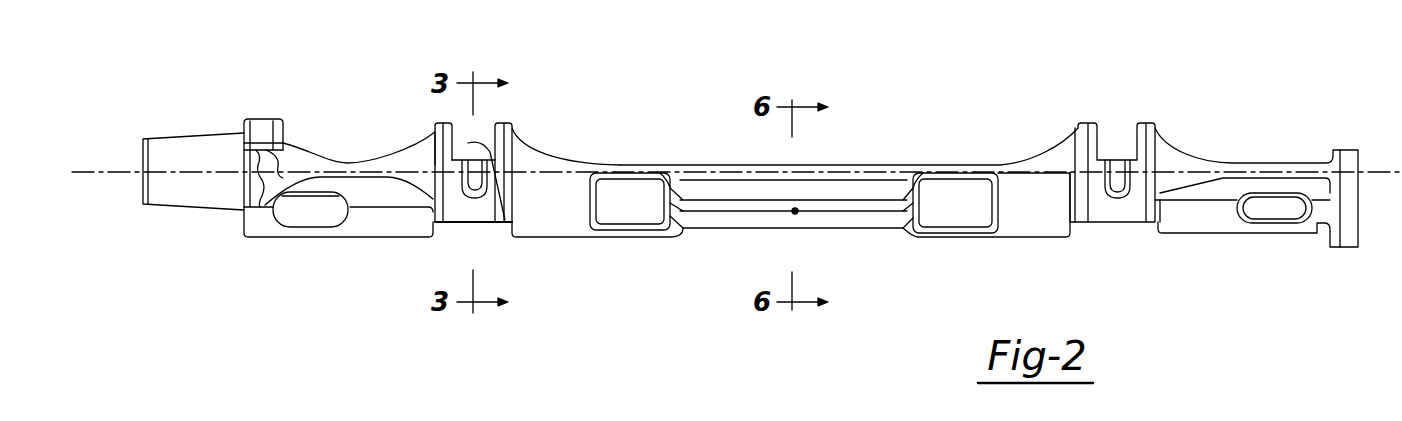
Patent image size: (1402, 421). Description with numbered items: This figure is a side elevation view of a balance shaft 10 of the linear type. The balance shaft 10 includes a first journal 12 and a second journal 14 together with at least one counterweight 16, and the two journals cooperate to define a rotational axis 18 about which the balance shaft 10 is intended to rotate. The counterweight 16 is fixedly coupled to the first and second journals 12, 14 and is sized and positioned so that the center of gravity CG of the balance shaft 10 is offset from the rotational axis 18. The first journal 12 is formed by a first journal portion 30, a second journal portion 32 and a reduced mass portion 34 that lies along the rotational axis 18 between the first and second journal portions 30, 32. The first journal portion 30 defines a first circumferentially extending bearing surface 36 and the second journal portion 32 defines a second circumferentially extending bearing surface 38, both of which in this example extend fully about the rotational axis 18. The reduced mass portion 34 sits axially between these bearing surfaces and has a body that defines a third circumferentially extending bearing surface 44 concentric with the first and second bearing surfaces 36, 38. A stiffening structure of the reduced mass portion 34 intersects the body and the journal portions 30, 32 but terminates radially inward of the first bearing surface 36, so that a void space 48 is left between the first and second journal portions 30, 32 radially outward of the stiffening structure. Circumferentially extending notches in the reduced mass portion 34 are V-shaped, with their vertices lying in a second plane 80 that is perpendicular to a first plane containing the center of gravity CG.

The balance shaft 10 is at (977, 115).
The first journal 12 is at (513, 88).
The second journal 14 is at (1128, 110).
The counterweight 16 is at (1030, 217).
The rotational axis 18 is at (118, 172).
The first journal portion 30 is at (447, 122).
The second journal portion 32 is at (502, 122).
The reduced mass portion 34 is at (478, 223).
The first circumferentially extending bearing surface 36 is at (437, 165).
The second circumferentially extending bearing surface 38 is at (500, 152).
The third circumferentially extending bearing surface 44 is at (463, 223).
The void space 48 is at (505, 217).
The second plane 80 is at (473, 273).
The center of gravity CG is at (792, 211).